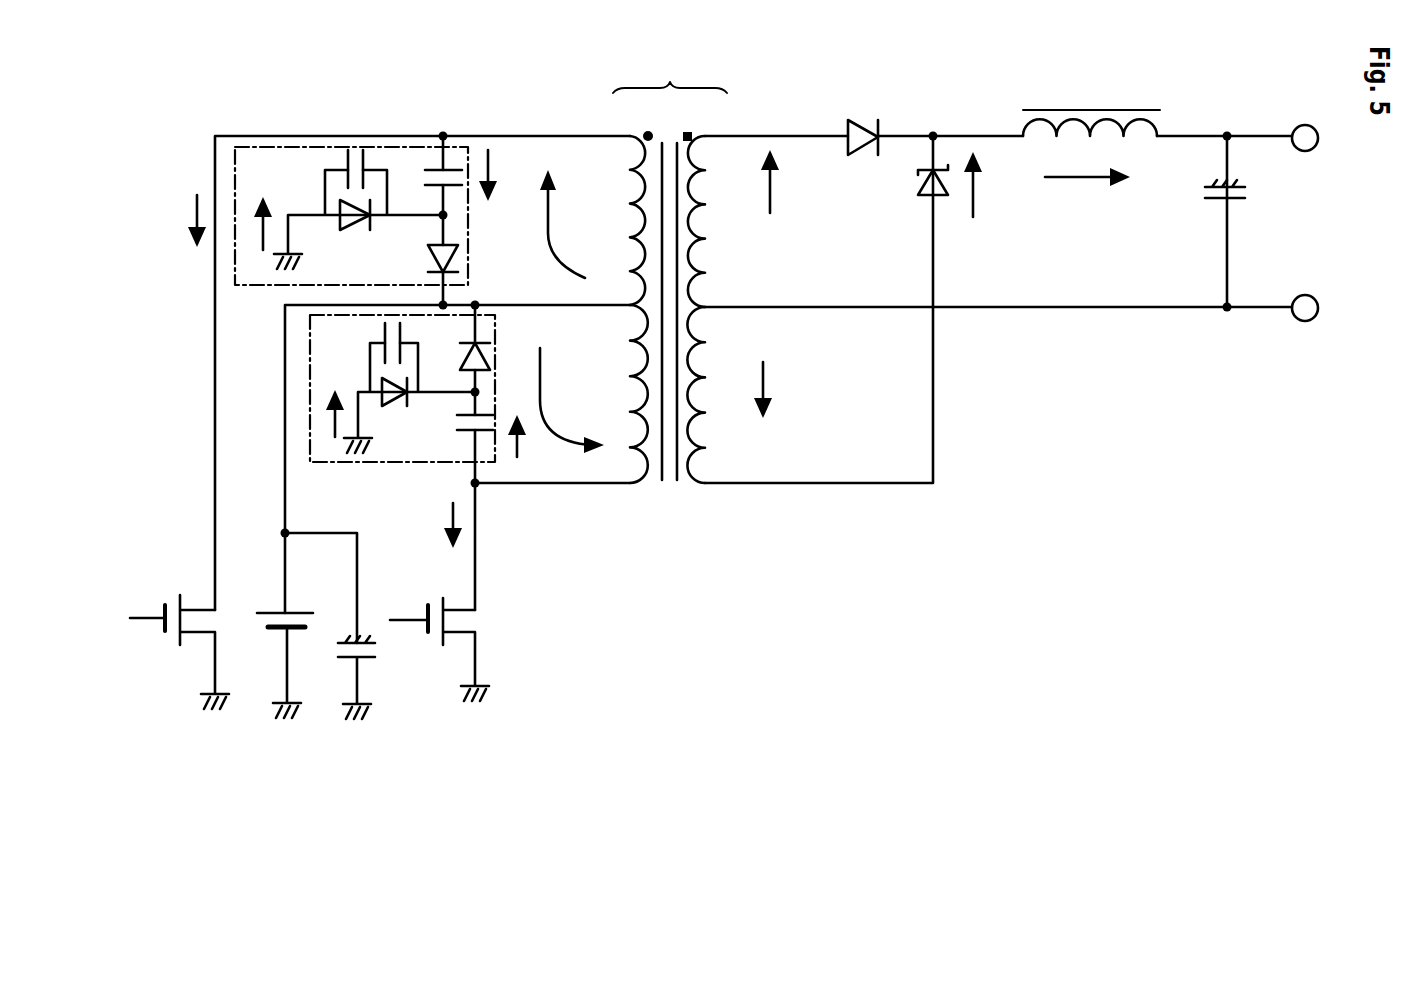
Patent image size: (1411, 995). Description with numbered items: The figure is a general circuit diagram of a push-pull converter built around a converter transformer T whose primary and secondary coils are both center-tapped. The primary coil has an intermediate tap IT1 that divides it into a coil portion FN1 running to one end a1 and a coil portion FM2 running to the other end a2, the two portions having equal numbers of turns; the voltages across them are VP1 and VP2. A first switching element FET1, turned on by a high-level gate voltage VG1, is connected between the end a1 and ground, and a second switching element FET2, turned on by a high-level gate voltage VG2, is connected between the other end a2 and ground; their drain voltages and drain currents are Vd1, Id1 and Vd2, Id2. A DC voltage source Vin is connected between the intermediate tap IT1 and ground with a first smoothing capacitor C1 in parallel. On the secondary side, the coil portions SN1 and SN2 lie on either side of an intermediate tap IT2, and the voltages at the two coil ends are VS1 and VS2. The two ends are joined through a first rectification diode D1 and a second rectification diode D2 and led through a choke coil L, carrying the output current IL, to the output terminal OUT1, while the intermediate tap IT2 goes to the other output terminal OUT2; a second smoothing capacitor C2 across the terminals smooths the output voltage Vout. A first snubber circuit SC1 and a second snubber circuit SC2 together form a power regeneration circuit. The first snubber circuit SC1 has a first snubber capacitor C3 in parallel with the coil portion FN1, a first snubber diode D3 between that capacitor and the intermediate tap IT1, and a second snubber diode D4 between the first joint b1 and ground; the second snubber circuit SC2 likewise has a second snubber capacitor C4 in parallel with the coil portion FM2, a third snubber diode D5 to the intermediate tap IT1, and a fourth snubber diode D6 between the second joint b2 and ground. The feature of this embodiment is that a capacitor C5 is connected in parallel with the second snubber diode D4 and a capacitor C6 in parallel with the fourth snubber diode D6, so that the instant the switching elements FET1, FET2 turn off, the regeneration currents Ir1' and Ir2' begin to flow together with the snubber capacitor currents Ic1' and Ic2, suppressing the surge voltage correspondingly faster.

The converter transformer T is at (670, 267).
The first coil portion FN1 is at (613, 220).
The second coil portion FM2 is at (616, 394).
The secondary coil portion SN1 is at (720, 221).
The secondary coil portion SN2 is at (716, 395).
The intermediate tap IT1 is at (611, 325).
The intermediate tap IT2 is at (735, 292).
The one end of primary coil a1 is at (540, 136).
The other end of primary coil a2 is at (548, 485).
The first joint b1 is at (440, 218).
The second joint b2 is at (470, 400).
The first snubber circuit SC1 is at (355, 147).
The second snubber circuit SC2 is at (372, 470).
The first smoothing capacitor C1 is at (364, 677).
The second smoothing capacitor C2 is at (1242, 195).
The first snubber capacitor C3 is at (432, 178).
The second snubber capacitor C4 is at (470, 439).
The capacitor in parallel with second snubber diode C5 is at (346, 157).
The capacitor in parallel with fourth snubber diode C6 is at (383, 334).
The first rectification diode D1 is at (863, 155).
The second rectification diode D2 is at (920, 183).
The first snubber diode D3 is at (429, 263).
The second snubber diode D4 is at (355, 232).
The third snubber diode D5 is at (470, 340).
The fourth snubber diode D6 is at (392, 406).
The first switching element FET1 is at (168, 628).
The second switching element FET2 is at (480, 635).
The choke coil L is at (1091, 106).
The DC voltage source Vin is at (276, 665).
The output terminal OUT1 is at (1307, 121).
The other output terminal OUT2 is at (1307, 328).
The gate voltage VG1 is at (125, 587).
The gate voltage VG2 is at (436, 660).
The drain voltage Vd1 is at (187, 562).
The drain voltage Vd2 is at (503, 585).
The drain current Id1 is at (177, 221).
The drain current Id2 is at (454, 546).
The first snubber capacitor current Ic1' is at (492, 191).
The second snubber capacitor current Ic2 is at (520, 421).
The regeneration current Ir1' is at (260, 210).
The regeneration current Ir2' is at (331, 400).
The coil portion voltage VP1 is at (557, 210).
The coil portion voltage VP2 is at (572, 415).
The secondary coil end voltage VS1 is at (783, 185).
The secondary coil end voltage VS2 is at (779, 389).
The output voltage Vout is at (998, 186).
The output current IL is at (1087, 189).